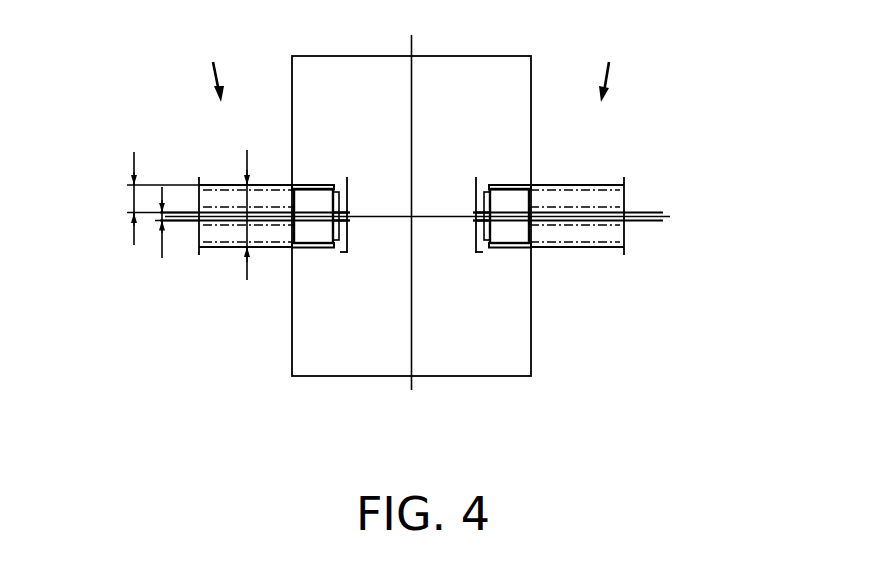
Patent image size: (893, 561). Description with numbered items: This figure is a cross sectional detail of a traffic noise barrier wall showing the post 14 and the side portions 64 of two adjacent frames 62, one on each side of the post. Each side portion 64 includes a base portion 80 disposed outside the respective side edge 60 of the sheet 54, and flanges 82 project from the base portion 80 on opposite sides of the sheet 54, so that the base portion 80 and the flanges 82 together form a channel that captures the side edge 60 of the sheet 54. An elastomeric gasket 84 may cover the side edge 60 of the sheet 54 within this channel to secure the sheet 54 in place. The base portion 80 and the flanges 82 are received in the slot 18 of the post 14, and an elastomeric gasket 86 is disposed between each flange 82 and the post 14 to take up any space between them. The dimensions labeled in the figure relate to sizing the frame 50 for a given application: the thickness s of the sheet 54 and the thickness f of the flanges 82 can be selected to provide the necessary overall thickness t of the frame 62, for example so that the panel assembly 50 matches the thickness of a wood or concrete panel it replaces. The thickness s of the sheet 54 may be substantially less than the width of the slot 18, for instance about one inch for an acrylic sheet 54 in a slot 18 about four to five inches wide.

The post 14 is at (447, 55).
The slot 18 is at (342, 251).
The panel assembly 50 is at (411, 69).
The sheet 54 is at (226, 245).
The side edge 60 is at (352, 225).
The frame 62 is at (223, 183).
The side portion 64 is at (287, 202).
The base portion 80 is at (347, 205).
The flange 82 is at (312, 195).
The elastomeric gasket 84 is at (315, 196).
The elastomeric gasket 86 is at (328, 184).
The thickness of the flanges f is at (134, 160).
The thickness of the sheet s is at (161, 256).
The overall thickness of the frame t is at (247, 280).